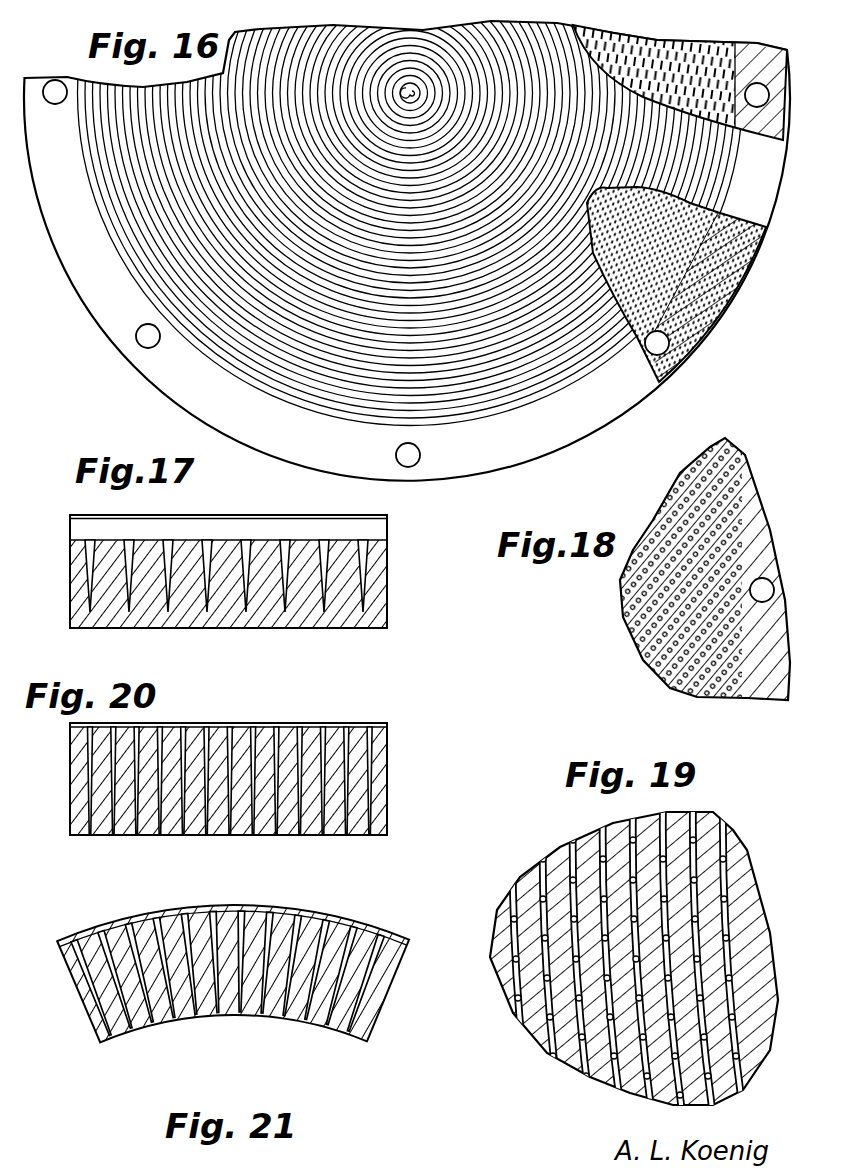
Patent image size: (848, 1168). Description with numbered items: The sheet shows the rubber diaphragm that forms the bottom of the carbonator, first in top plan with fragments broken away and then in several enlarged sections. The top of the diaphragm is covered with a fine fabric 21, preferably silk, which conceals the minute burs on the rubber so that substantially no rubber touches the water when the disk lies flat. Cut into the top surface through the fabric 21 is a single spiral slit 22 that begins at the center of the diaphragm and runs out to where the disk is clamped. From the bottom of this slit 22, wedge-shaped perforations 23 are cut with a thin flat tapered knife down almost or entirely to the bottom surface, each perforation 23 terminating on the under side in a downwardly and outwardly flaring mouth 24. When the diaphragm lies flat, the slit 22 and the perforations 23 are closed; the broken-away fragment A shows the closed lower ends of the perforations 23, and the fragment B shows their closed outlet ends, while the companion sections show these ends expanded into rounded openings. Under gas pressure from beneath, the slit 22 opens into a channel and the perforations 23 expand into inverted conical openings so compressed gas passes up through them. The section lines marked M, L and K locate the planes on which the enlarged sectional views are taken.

In FIG. 17, the fine fabric 21 is at (343, 515).
In FIG. 20, the fine fabric 21 is at (197, 722).
In FIG. 21, the fine fabric 21 is at (230, 907).
In FIG. 16, the spiral slit 22 is at (570, 363).
In FIG. 17, the spiral slit 22 is at (253, 527).
In FIG. 20, the spiral slit 22 is at (247, 723).
In FIG. 21, the spiral slit 22 is at (297, 917).
In FIG. 19, the spiral slit 22 is at (520, 960).
In FIG. 16, the perforations 23 is at (722, 62).
In FIG. 17, the perforations 23 is at (147, 540).
In FIG. 20, the perforations 23 is at (360, 723).
In FIG. 21, the perforations 23 is at (367, 925).
In FIG. 18, the perforations 23 is at (695, 570).
In FIG. 19, the perforations 23 is at (525, 1028).
In FIG. 17, the flaring mouth 24 is at (285, 628).
In FIG. 20, the flaring mouth 24 is at (250, 835).
In FIG. 21, the flaring mouth 24 is at (245, 1020).
In FIG. 16, the fragment A is at (630, 243).
In FIG. 16, the fragment B is at (745, 112).
In FIG. 16, the section line M is at (220, 153).
In FIG. 17, the section line L is at (62, 540).
In FIG. 17, the section line K is at (475, 612).